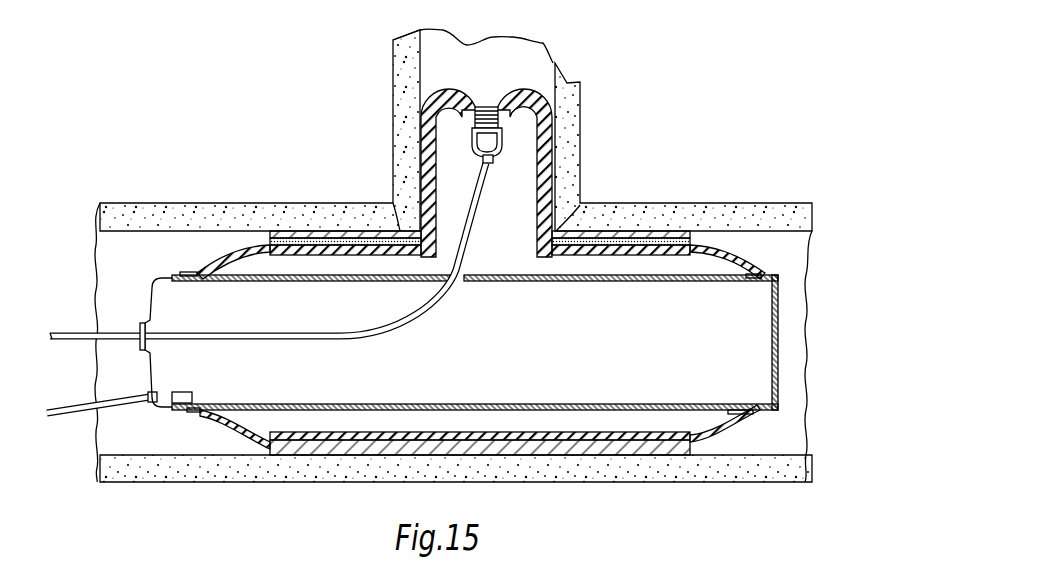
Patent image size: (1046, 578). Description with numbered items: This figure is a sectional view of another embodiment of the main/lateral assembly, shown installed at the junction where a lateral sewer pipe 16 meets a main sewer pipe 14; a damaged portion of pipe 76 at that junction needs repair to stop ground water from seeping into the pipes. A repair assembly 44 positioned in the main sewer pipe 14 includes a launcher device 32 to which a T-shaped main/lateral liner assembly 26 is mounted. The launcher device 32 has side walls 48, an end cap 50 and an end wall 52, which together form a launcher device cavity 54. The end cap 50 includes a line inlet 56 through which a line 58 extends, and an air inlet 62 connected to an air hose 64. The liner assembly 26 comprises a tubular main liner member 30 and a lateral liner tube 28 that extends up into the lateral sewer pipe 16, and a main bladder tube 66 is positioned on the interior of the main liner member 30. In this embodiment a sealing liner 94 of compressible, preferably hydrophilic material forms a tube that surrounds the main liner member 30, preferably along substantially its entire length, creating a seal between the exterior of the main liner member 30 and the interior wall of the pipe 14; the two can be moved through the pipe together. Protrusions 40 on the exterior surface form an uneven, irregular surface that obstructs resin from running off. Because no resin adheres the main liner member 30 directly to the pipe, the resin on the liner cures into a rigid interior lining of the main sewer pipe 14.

The main sewer pipe 14 is at (735, 204).
The lateral sewer pipe 16 is at (580, 116).
The main/lateral liner assembly 26 is at (533, 202).
The lateral liner tube 28 is at (467, 108).
The main liner member 30 is at (322, 243).
The launcher device 32 is at (155, 278).
The protrusions 40 is at (425, 157).
The repair assembly 44 is at (96, 268).
The side walls 48 is at (243, 277).
The end cap 50 is at (435, 307).
The end wall 52 is at (780, 300).
The launcher device cavity 54 is at (745, 372).
The line inlet 56 is at (140, 323).
The line 58 is at (100, 340).
The air inlet 62 is at (153, 406).
The air hose 64 is at (92, 420).
The main bladder tube 66 is at (215, 262).
The damaged portion of pipe 76 is at (391, 207).
The sealing liner 94 is at (553, 244).